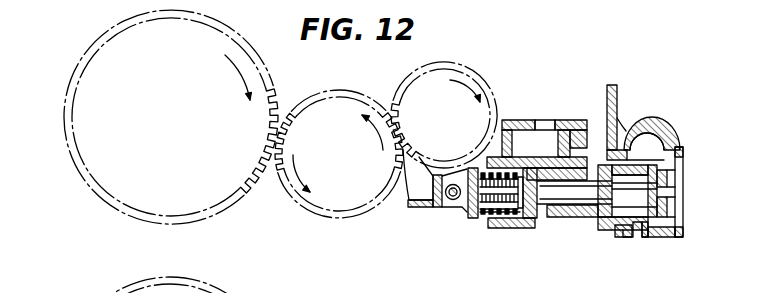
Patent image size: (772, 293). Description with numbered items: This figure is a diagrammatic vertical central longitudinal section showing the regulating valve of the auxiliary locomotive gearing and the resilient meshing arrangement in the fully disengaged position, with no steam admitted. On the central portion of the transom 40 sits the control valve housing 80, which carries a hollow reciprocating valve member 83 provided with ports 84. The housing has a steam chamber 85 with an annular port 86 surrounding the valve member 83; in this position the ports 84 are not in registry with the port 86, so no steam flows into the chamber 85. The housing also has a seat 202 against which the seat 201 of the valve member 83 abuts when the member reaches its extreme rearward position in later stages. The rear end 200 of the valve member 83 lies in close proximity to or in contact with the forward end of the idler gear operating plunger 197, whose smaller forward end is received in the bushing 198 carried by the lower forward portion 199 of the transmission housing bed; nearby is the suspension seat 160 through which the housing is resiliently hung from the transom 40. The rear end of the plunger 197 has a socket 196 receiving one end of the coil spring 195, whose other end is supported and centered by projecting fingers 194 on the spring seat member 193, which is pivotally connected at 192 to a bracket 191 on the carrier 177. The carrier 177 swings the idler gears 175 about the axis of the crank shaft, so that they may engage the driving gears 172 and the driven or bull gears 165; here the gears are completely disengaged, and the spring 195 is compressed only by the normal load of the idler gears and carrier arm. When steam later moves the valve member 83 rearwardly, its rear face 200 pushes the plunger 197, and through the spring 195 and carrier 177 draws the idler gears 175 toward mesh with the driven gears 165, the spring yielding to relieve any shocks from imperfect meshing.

The driven gear 165 is at (83, 143).
The idler gear 175 is at (303, 192).
The driving gear 172 is at (428, 77).
The carrier 177 is at (420, 203).
The bracket 191 is at (447, 204).
The pivot 192 is at (451, 208).
The spring seat member 193 is at (453, 200).
The projecting fingers 194 is at (483, 213).
The coil spring 195 is at (492, 218).
The socket 196 is at (500, 228).
The idler gear operating plunger 197 is at (527, 228).
The bushing 198 is at (541, 228).
The lower forward portion 199 is at (556, 160).
The rear end 200 is at (597, 214).
The suspension seat 160 is at (565, 130).
The transom 40 is at (618, 85).
The seat 202 is at (612, 158).
The steam chamber 85 is at (640, 137).
The annular port 86 is at (645, 158).
The control valve housing 80 is at (670, 133).
The valve member 83 is at (620, 230).
The ports 84 is at (665, 202).
The seat 201 is at (640, 237).